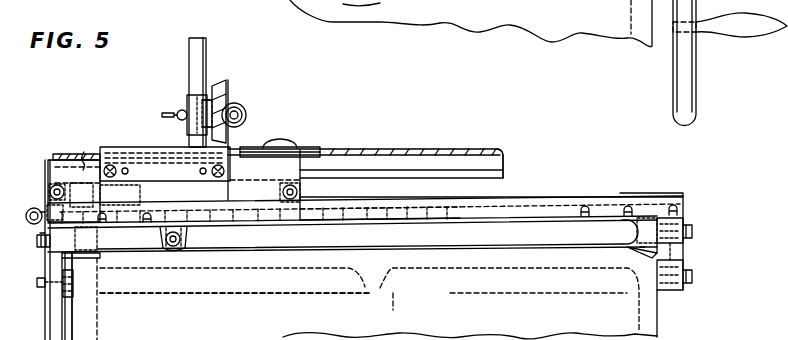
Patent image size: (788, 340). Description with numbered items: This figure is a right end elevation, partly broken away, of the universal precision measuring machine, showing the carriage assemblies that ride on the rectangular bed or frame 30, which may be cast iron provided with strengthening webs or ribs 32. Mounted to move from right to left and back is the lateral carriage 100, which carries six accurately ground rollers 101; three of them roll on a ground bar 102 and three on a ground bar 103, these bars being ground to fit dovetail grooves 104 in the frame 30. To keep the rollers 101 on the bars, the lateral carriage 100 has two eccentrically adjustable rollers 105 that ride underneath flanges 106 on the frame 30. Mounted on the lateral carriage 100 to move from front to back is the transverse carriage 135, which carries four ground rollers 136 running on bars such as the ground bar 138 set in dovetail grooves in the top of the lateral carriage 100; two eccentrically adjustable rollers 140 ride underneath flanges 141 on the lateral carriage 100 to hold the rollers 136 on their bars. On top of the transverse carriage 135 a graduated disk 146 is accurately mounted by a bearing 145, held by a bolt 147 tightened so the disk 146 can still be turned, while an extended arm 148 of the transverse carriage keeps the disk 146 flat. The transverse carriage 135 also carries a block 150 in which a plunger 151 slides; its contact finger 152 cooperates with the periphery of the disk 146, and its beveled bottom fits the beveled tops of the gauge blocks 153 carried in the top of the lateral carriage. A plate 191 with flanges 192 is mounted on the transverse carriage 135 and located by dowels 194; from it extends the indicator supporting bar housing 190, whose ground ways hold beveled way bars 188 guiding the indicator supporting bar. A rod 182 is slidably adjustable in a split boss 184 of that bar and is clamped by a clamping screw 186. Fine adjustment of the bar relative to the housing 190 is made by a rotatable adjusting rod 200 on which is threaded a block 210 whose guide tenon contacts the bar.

The frame 30 is at (650, 322).
The strengthening webs or ribs 32 is at (450, 292).
The lateral carriage 100 is at (670, 230).
The rollers 101 is at (90, 240).
The ground bar 102 is at (83, 257).
The ground bar 103 is at (637, 248).
The dovetail grooves 104 is at (83, 255).
The eccentrically adjustable rollers 105 is at (72, 300).
The flanges 106 is at (65, 263).
The transverse carriage 135 is at (303, 168).
The rollers 136 is at (50, 177).
The ground bar 138 is at (537, 203).
The eccentrically adjustable rollers 140 is at (187, 240).
The flanges 141 is at (367, 225).
The bearing 145 is at (250, 147).
The graduated disk 146 is at (387, 148).
The bolt 147 is at (300, 148).
The extended arm 148 is at (495, 157).
The block 150 is at (117, 194).
The plunger 151 is at (45, 157).
The contact finger 152 is at (50, 160).
The gauge blocks 153 is at (367, 208).
The rod 182 is at (200, 43).
The split boss 184 is at (193, 97).
The clamping screw 186 is at (187, 108).
The beveled way bars 188 is at (213, 78).
The indicator supporting bar housing 190 is at (229, 80).
The plate 191 is at (147, 140).
The flanges 192 is at (83, 152).
The dowels 194 is at (128, 172).
The adjusting rod 200 is at (246, 115).
The block 210 is at (243, 108).